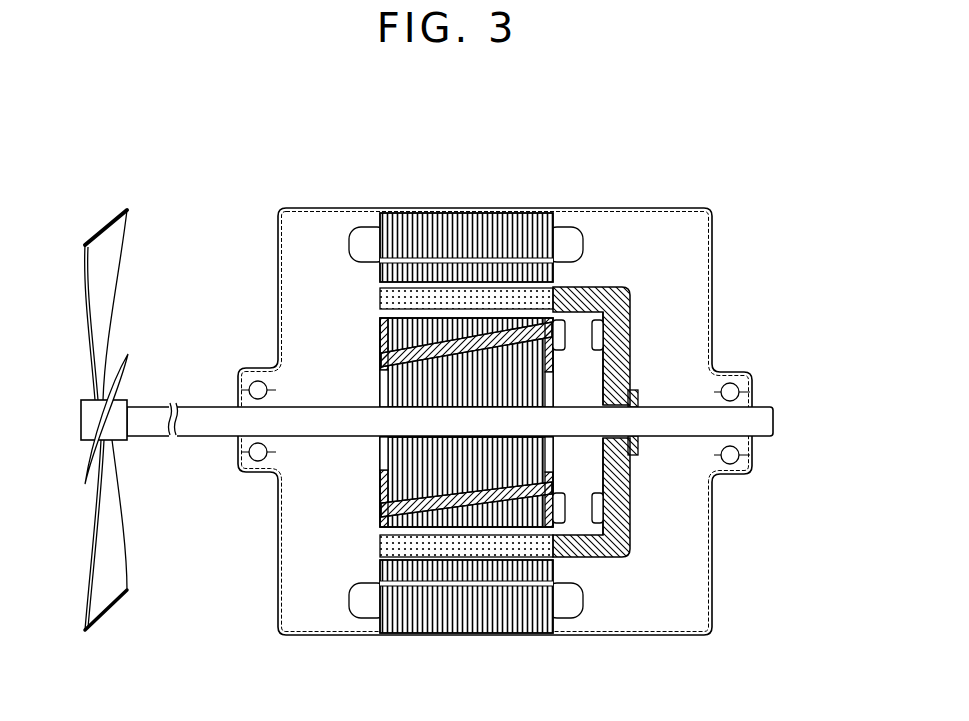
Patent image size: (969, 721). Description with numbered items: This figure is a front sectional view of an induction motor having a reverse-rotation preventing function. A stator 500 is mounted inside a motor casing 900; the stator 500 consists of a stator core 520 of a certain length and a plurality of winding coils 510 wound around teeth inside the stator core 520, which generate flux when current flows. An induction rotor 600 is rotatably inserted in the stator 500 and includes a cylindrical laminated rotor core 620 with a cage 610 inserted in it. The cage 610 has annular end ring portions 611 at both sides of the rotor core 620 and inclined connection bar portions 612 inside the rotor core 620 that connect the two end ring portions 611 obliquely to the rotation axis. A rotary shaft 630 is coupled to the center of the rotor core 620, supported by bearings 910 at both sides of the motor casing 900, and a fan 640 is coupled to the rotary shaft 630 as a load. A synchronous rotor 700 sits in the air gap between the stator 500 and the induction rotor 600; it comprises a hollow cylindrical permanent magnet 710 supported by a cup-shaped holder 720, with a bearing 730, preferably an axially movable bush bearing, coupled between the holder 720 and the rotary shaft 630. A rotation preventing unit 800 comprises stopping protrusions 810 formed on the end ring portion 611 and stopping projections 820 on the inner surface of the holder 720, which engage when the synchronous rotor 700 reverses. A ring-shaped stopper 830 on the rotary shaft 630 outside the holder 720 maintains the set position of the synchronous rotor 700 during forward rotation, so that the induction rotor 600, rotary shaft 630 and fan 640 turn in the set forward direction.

The stator 500 is at (448, 374).
The winding coil 510 is at (351, 227).
The stator core 520 is at (377, 225).
The induction rotor 600 is at (424, 479).
The cage 610 is at (372, 496).
The end ring portion 611 is at (380, 340).
The inclined connection bar portion 612 is at (466, 490).
The rotor core 620 is at (398, 522).
The rotary shaft 630 is at (771, 424).
The fan 640 is at (100, 227).
The synchronous rotor 700 is at (585, 334).
The permanent magnet 710 is at (526, 281).
The holder 720 is at (614, 282).
The bearing 730 is at (630, 493).
The rotation preventing unit 800 is at (701, 413).
The stopping protrusion 810 is at (561, 346).
The stopping projection 820 is at (600, 338).
The stopper 830 is at (638, 449).
The motor casing 900 is at (473, 207).
The bearing 910 is at (256, 378).